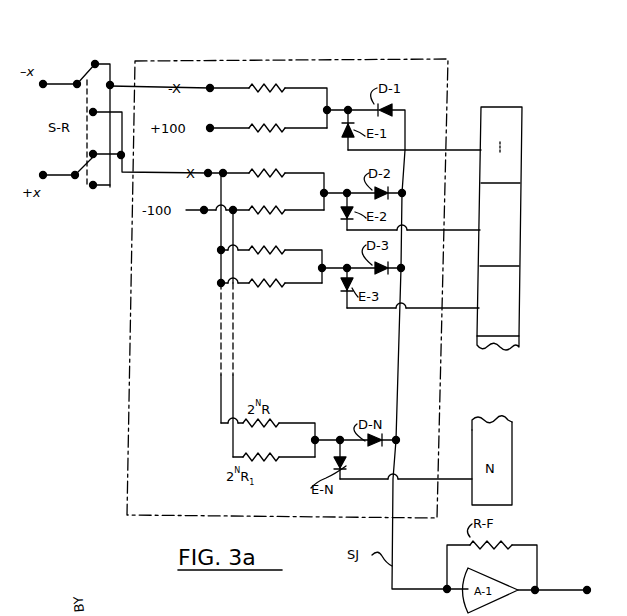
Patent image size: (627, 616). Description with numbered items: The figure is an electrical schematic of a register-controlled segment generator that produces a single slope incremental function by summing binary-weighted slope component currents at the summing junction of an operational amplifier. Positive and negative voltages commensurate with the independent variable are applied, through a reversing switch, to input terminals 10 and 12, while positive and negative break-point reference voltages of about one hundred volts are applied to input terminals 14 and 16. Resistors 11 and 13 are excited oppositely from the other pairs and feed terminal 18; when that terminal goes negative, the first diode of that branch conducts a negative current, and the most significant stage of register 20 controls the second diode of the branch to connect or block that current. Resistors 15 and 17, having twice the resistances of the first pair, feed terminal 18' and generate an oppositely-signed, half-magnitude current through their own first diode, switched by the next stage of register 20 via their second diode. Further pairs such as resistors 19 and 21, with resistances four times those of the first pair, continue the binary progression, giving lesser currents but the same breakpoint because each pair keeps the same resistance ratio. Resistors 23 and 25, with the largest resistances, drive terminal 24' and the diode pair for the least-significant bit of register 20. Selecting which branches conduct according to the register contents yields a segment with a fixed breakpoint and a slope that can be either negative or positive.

The input terminal 10 is at (208, 173).
The resistor 11 is at (284, 92).
The input terminal 12 is at (210, 88).
The resistor 13 is at (282, 135).
The input terminal 14 is at (210, 128).
The resistor 15 is at (284, 180).
The input terminal 16 is at (204, 216).
The resistor 17 is at (285, 216).
The terminal 18 is at (345, 92).
The terminal 18' is at (332, 176).
The resistor 19 is at (284, 254).
The register 20 is at (583, 87).
The resistor 21 is at (270, 292).
The resistor 23 is at (232, 432).
The terminal 24' is at (331, 422).
The resistor 25 is at (230, 447).